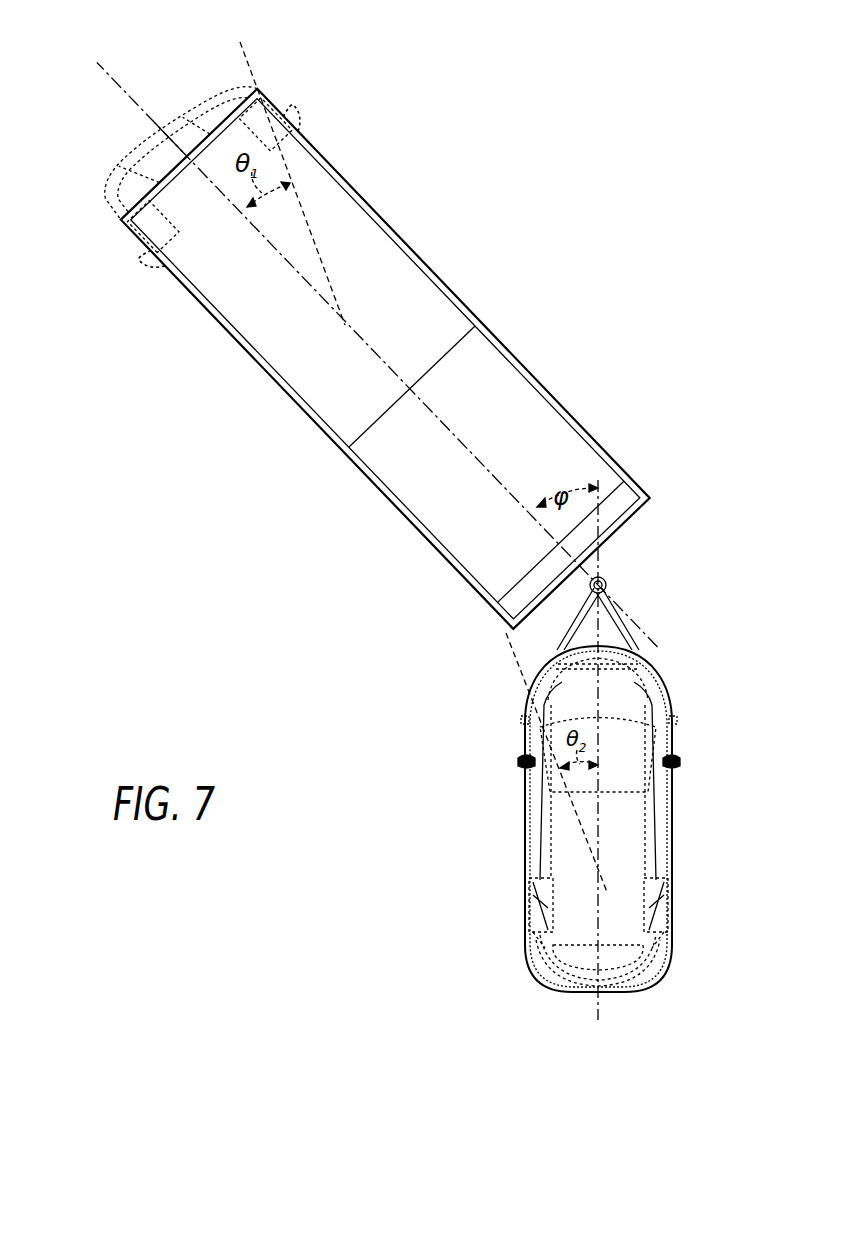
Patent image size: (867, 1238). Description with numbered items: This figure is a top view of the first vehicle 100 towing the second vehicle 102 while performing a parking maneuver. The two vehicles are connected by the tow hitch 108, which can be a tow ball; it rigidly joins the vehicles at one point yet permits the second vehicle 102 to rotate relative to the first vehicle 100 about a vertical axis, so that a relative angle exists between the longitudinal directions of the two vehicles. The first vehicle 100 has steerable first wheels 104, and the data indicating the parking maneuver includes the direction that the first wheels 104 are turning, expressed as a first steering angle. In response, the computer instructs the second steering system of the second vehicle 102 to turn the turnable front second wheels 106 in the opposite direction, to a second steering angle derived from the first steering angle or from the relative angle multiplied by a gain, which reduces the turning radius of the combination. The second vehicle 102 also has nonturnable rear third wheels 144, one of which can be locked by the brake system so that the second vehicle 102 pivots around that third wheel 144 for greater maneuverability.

The first vehicle 100 is at (432, 262).
The second vehicle 102 is at (626, 993).
The first wheels 104 is at (294, 118).
The second wheels 106 is at (523, 720).
The tow hitch 108 is at (612, 583).
The third wheels 144 is at (527, 912).